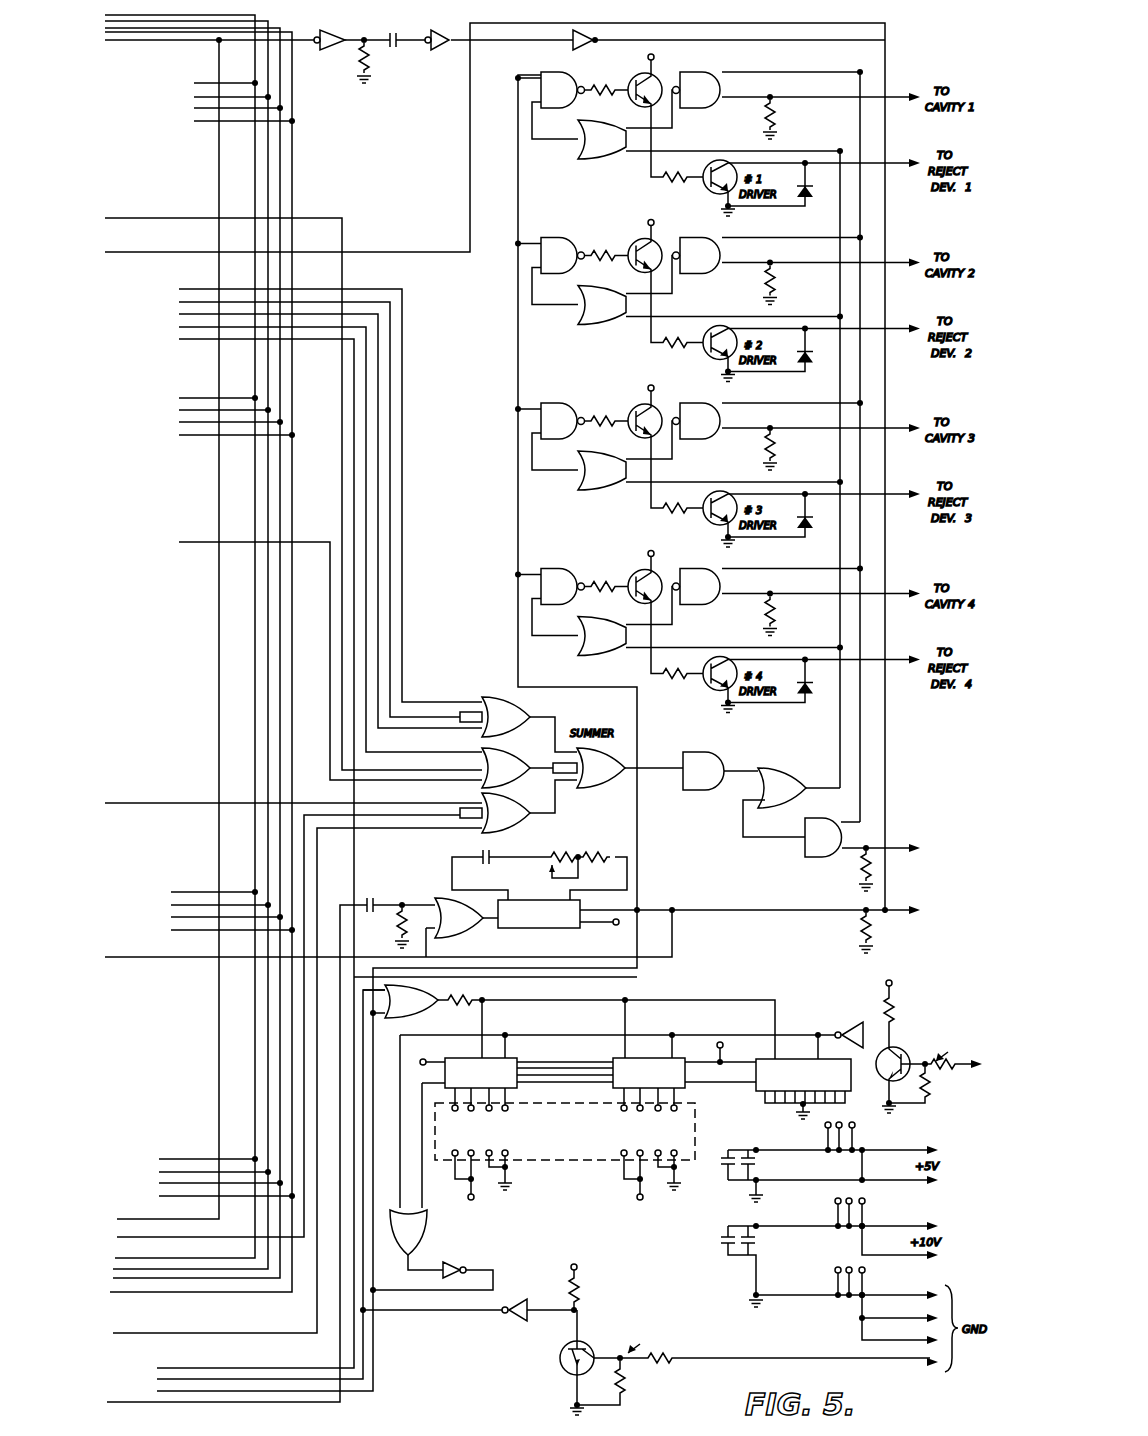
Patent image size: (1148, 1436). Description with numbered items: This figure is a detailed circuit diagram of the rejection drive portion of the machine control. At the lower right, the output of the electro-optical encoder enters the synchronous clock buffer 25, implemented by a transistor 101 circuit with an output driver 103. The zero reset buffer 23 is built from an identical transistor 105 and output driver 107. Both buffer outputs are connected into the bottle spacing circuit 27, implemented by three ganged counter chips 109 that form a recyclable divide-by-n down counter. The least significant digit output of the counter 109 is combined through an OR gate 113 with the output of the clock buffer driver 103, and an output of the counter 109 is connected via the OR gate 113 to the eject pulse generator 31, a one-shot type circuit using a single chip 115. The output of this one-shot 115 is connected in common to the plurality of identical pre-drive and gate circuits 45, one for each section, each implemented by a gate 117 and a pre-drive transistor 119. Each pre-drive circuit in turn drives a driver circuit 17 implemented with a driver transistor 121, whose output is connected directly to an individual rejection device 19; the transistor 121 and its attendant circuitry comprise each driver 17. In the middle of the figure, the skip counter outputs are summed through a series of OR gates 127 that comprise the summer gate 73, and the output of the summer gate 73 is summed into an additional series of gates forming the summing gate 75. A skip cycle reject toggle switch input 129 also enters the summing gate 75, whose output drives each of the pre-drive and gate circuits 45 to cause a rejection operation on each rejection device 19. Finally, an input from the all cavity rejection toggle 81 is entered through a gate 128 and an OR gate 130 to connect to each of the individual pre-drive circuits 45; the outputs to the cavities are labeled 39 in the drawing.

The gate 117 is at (550, 105).
The pre-drive transistor 119 is at (635, 115).
The pre-drive and gate circuit 45 is at (681, 144).
The driver transistor 121 is at (787, 187).
The driver circuit 17 is at (721, 138).
The cavity output line 39 is at (843, 106).
The rejection device 19 is at (848, 172).
The OR gate 127 is at (571, 765).
The summer gate 73 is at (568, 806).
The summing gate 75 is at (703, 771).
The OR gate 130 is at (791, 802).
The gate 128 is at (816, 818).
The all cavity rejection toggle 81 is at (898, 840).
The skip cycle reject toggle switch input 129 is at (900, 918).
The eject pulse generator 31 is at (434, 880).
The one-shot chip 115 is at (518, 928).
The counter chips 109 is at (518, 1058).
The output driver 103 is at (846, 1025).
The transistor 101 is at (929, 1046).
The synchronous clock buffer 25 is at (906, 1110).
The bottle spacing circuit 27 is at (562, 1168).
The OR gate 113 is at (408, 1232).
The output driver 107 is at (510, 1302).
The transistor 105 is at (562, 1350).
The zero reset buffer 23 is at (632, 1376).